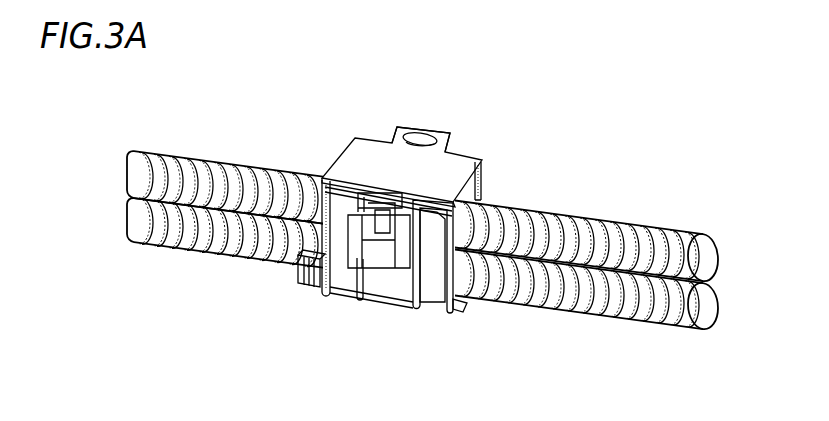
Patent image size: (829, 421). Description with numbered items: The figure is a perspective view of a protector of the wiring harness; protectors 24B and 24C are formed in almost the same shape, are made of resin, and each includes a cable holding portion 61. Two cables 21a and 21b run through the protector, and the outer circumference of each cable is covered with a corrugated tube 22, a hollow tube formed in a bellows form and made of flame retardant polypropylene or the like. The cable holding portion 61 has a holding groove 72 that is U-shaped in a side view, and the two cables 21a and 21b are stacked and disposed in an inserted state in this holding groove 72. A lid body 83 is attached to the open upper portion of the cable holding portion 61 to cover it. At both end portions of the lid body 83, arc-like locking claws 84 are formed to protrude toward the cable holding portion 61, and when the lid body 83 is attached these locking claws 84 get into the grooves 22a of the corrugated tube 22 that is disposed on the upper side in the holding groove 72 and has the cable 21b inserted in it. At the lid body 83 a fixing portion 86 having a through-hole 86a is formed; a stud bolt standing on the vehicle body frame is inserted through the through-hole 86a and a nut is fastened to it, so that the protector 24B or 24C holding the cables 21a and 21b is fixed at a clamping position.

The corrugated tube 22 is at (192, 250).
The groove 22a is at (265, 262).
The cable 21a is at (612, 307).
The cable 21b is at (627, 227).
The protector 24B is at (463, 112).
The protector 24C is at (422, 228).
The lid body 83 is at (430, 137).
The locking claw 84 is at (480, 200).
The fixing portion 86 is at (392, 130).
The through-hole 86a is at (427, 128).
The cable holding portion 61 is at (427, 310).
The holding groove 72 is at (466, 290).